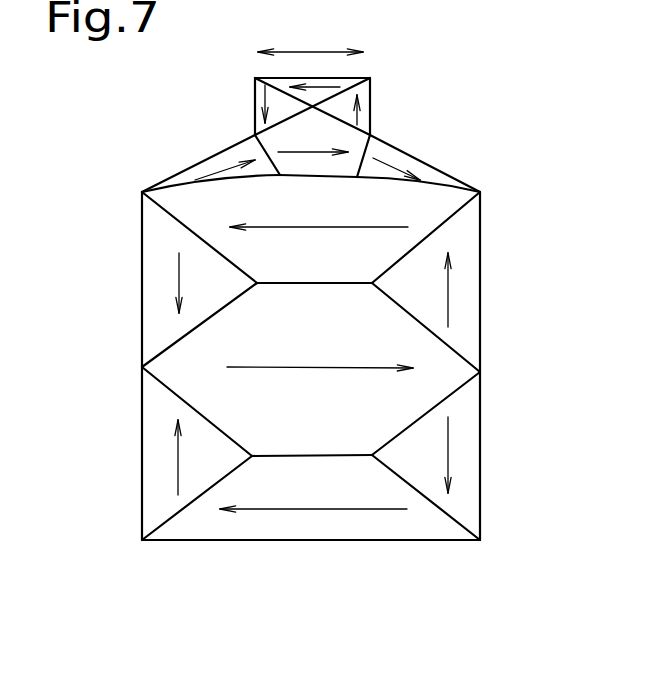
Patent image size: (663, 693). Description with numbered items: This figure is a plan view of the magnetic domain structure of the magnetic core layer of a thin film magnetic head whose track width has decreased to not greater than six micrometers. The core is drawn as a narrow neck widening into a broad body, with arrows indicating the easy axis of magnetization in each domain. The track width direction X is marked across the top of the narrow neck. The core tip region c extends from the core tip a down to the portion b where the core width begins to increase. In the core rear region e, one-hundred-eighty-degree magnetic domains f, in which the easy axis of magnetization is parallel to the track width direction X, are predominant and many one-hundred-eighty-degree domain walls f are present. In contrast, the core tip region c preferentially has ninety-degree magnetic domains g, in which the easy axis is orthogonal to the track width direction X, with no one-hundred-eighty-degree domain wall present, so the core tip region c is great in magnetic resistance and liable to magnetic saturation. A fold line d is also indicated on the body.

The track width direction X is at (310, 36).
The core tip a is at (270, 80).
The portion increasing in core width b is at (252, 135).
The core tip region c is at (370, 100).
The fold line portion d is at (338, 455).
The core rear region e is at (470, 490).
The 180° magnetic domains f is at (305, 532).
The 90° magnetic domains g is at (255, 100).